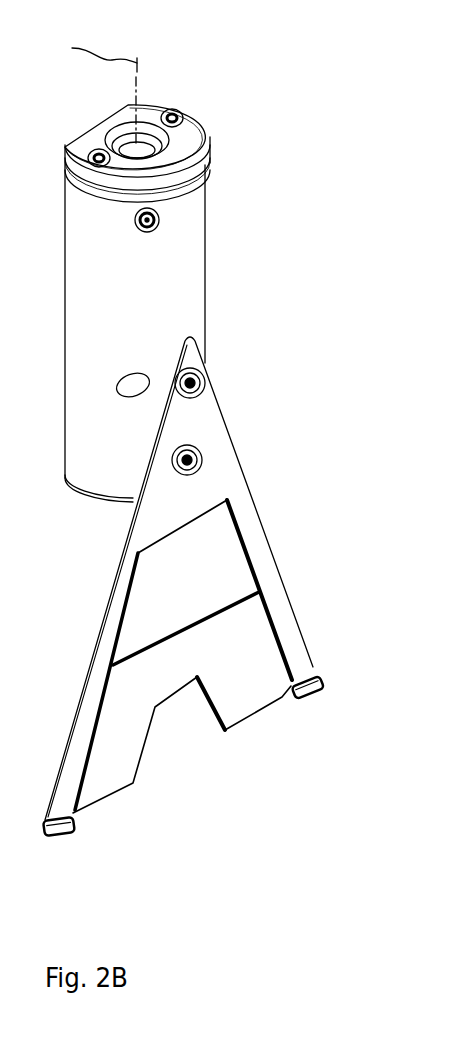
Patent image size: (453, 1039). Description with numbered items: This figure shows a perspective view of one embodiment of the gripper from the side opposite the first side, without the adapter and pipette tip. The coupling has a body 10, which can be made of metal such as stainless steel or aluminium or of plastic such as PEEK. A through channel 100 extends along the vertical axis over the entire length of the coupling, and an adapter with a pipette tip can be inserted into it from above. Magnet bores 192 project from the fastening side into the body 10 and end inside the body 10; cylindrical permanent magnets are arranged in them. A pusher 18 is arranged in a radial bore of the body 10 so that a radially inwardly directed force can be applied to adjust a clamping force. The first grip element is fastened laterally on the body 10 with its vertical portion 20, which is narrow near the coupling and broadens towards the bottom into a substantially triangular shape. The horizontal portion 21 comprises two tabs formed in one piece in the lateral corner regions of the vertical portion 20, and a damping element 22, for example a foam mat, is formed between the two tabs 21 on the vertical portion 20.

The through channel 100 is at (147, 147).
The body 10 is at (185, 295).
The pusher 18 is at (150, 231).
The magnet bores 192 is at (137, 385).
The vertical portion 20 is at (93, 678).
The horizontal portion 21 is at (323, 693).
The damping element 22 is at (238, 697).